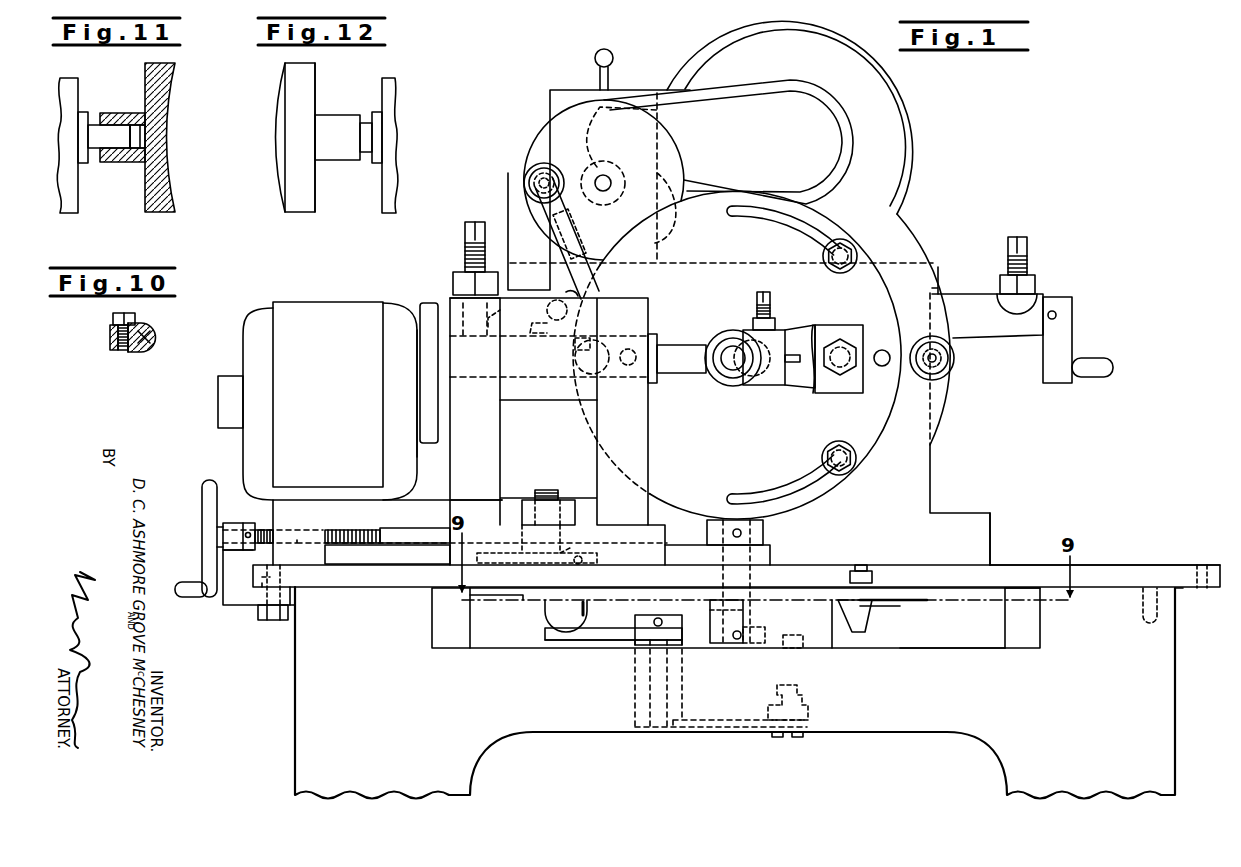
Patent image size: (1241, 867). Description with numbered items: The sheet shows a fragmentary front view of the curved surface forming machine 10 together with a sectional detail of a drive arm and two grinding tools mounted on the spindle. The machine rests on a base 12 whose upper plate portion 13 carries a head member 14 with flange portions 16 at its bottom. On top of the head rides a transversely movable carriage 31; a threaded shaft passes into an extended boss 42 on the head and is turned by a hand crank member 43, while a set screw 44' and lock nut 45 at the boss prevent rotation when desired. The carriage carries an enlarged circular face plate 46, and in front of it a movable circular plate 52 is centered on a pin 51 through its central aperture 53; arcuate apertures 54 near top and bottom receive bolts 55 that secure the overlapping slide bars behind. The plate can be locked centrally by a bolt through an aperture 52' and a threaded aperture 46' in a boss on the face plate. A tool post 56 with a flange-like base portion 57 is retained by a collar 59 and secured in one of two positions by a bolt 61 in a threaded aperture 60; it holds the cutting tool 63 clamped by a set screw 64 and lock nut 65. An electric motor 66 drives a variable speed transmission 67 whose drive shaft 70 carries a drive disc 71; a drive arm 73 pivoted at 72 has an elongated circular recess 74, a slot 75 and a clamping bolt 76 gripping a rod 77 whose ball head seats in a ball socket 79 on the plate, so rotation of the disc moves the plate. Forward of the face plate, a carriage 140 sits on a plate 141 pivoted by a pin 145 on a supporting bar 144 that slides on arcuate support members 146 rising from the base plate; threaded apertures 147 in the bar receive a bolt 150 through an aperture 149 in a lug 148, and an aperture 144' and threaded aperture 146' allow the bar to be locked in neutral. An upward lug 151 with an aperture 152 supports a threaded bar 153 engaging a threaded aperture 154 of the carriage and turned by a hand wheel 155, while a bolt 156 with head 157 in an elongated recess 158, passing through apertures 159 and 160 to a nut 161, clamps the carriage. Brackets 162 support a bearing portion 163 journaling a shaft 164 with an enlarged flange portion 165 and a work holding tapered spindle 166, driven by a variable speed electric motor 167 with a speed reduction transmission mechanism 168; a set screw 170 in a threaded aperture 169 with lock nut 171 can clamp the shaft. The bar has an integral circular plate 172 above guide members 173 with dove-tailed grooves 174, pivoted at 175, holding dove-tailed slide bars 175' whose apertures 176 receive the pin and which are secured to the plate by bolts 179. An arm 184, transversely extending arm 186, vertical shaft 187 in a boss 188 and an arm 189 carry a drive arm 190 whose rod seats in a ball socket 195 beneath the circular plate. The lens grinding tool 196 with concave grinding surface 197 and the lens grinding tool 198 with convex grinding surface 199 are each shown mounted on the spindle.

In FIG. 1, the curved surface forming machine 10 is at (662, 43).
In FIG. 1, the base 12 is at (751, 693).
In FIG. 1, the upper plate portion 13 is at (952, 656).
In FIG. 1, the head member 14 is at (943, 389).
In FIG. 1, the flange portions 16 is at (1000, 536).
In FIG. 1, the carriage 31 is at (945, 267).
In FIG. 1, the boss 42 is at (987, 306).
In FIG. 1, the hand crank member 43 is at (1078, 339).
In FIG. 1, the bolt 44' is at (1031, 256).
In FIG. 1, the lock nut 45 is at (1031, 280).
In FIG. 1, the face plate 46 is at (939, 378).
In FIG. 1, the threaded aperture 46' is at (953, 356).
In FIG. 1, the pin 51 is at (714, 367).
In FIG. 1, the movable circular plate 52 is at (743, 355).
In FIG. 1, the aperture 52' is at (877, 347).
In FIG. 1, the central aperture 53 is at (733, 344).
In FIG. 1, the elongated arcuate apertures 54 is at (784, 355).
In FIG. 1, the bolt 55 is at (829, 357).
In FIG. 1, the tool post 56 is at (774, 344).
In FIG. 1, the flange-like base portion 57 is at (837, 348).
In FIG. 1, the collar 59 is at (733, 348).
In FIG. 1, the threaded aperture 60 is at (734, 361).
In FIG. 1, the bolt 61 is at (828, 380).
In FIG. 1, the cutting tool 63 is at (738, 394).
In FIG. 1, the set screw 64 is at (768, 294).
In FIG. 1, the lock nut 65 is at (754, 313).
In FIG. 1, the electric motor 66 is at (771, 117).
In FIG. 1, the variable speed transmission 67 is at (720, 169).
In FIG. 1, the drive shaft 70 is at (603, 191).
In FIG. 1, the drive disc 71 is at (597, 180).
In FIG. 1, the pivot 72 is at (523, 183).
In FIG. 10, the drive arm 73 is at (152, 333).
In FIG. 1, the drive arm 73 is at (553, 239).
In FIG. 10, the elongated circular recess 74 is at (135, 347).
In FIG. 1, the elongated circular recess 74 is at (552, 237).
In FIG. 10, the slot 75 is at (103, 337).
In FIG. 10, the bolt 76 is at (108, 316).
In FIG. 1, the bolt 76 is at (557, 296).
In FIG. 10, the rod 77 is at (157, 340).
In FIG. 1, the rod 77 is at (568, 344).
In FIG. 1, the ball socket 79 is at (578, 357).
In FIG. 1, the carriage 140 is at (704, 523).
In FIG. 1, the plate 141 is at (731, 581).
In FIG. 1, the supporting bar 144 is at (1105, 557).
In FIG. 1, the aperture 144' is at (1183, 567).
In FIG. 1, the pin 145 is at (771, 581).
In FIG. 1, the arcuate support members 146 is at (651, 613).
In FIG. 1, the threaded aperture 146' is at (1130, 605).
In FIG. 1, the threaded aperture 147 is at (718, 592).
In FIG. 1, the lug 148 is at (246, 587).
In FIG. 1, the aperture 149 is at (256, 601).
In FIG. 1, the bolt 150 is at (261, 628).
In FIG. 1, the lug 151 is at (235, 526).
In FIG. 1, the aperture 152 is at (236, 545).
In FIG. 1, the threaded bar 153 is at (312, 522).
In FIG. 1, the threaded aperture 154 is at (445, 532).
In FIG. 1, the hand wheel 155 is at (193, 538).
In FIG. 1, the bolt 156 is at (544, 483).
In FIG. 1, the head 157 is at (595, 570).
In FIG. 1, the elongated recess 158 is at (533, 544).
In FIG. 1, the aperture 159 is at (579, 541).
In FIG. 1, the aperture 160 is at (529, 539).
In FIG. 1, the nut 161 is at (556, 500).
In FIG. 11, the brackets 162 is at (73, 135).
In FIG. 12, the brackets 162 is at (395, 135).
In FIG. 1, the brackets 162 is at (565, 411).
In FIG. 1, the bearing portion 163 is at (548, 409).
In FIG. 1, the shaft 164 is at (547, 325).
In FIG. 11, the enlarged flange portion 165 is at (96, 125).
In FIG. 12, the enlarged flange portion 165 is at (363, 127).
In FIG. 1, the enlarged flange portion 165 is at (664, 343).
In FIG. 11, the work holding tapered spindle 166 is at (111, 154).
In FIG. 12, the work holding tapered spindle 166 is at (343, 149).
In FIG. 1, the work holding tapered spindle 166 is at (681, 349).
In FIG. 1, the variable speed electric motor 167 is at (317, 391).
In FIG. 1, the speed reduction transmission mechanism 168 is at (418, 362).
In FIG. 1, the threaded aperture 169 is at (509, 313).
In FIG. 1, the set screw 170 is at (454, 247).
In FIG. 1, the lock nut 171 is at (459, 285).
In FIG. 1, the circular plate 172 is at (736, 576).
In FIG. 1, the guide members 173 is at (736, 618).
In FIG. 1, the dove-tailed groove 174 is at (834, 616).
In FIG. 1, the pivot 175 is at (810, 650).
In FIG. 1, the dove-tailed slide bar 175' is at (897, 607).
In FIG. 1, the aperture 176 is at (721, 621).
In FIG. 1, the bolt 179 is at (864, 562).
In FIG. 1, the arm 184 is at (809, 711).
In FIG. 1, the transversely extending arm 186 is at (721, 712).
In FIG. 1, the vertical shaft 187 is at (682, 683).
In FIG. 1, the boss 188 is at (658, 641).
In FIG. 1, the transversely extending arm 189 is at (590, 652).
In FIG. 1, the drive arm 190 is at (595, 633).
In FIG. 1, the ball socket 195 is at (547, 615).
In FIG. 11, the lens grinding tool 196 is at (155, 150).
In FIG. 11, the concave grinding surface 197 is at (152, 134).
In FIG. 12, the lens grinding tool 198 is at (330, 137).
In FIG. 12, the convex grinding surface 199 is at (275, 137).